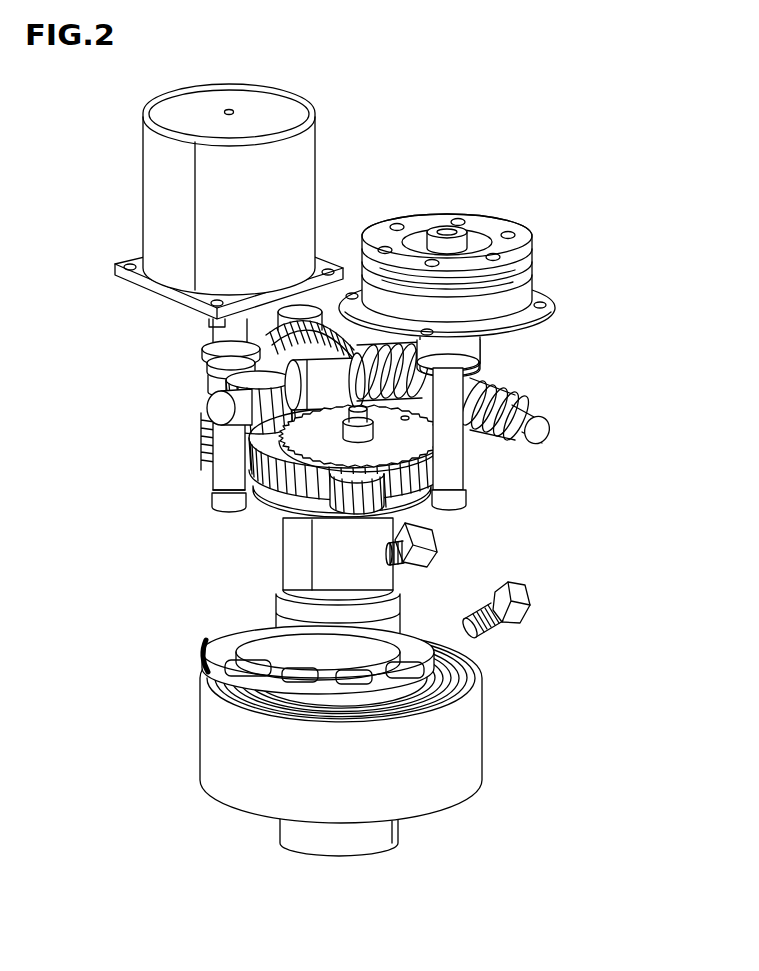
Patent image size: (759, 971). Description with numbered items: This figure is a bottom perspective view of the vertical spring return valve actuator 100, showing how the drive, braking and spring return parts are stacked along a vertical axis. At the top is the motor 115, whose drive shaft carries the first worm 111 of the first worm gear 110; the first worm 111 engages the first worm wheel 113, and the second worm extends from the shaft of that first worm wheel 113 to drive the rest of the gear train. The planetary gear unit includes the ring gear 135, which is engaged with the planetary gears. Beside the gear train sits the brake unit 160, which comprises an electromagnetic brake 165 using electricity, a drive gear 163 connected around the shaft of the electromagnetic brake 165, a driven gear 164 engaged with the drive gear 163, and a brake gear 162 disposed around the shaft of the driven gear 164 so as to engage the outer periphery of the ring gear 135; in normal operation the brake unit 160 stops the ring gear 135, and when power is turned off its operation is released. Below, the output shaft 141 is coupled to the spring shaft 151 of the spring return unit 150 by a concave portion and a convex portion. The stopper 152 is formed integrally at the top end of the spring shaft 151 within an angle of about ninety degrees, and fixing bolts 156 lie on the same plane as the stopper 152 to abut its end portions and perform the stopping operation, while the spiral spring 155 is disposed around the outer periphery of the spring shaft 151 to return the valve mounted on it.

The vertical spring return valve actuator 100 is at (577, 210).
The first worm gear 110 is at (158, 415).
The first worm 111 is at (205, 356).
The first worm wheel 113 is at (210, 380).
The motor 115 is at (157, 195).
The ring gear 135 is at (275, 532).
The output shaft 141 is at (292, 564).
The spring return unit 150 is at (335, 776).
The spring shaft 151 is at (343, 850).
The stopper 152 is at (255, 623).
The spiral spring 155 is at (440, 770).
The fixing bolts 156 is at (428, 549).
The brake unit 160 is at (447, 237).
The brake gear 162 is at (397, 497).
The drive gear 163 is at (463, 462).
The driven gear 164 is at (460, 447).
The electromagnetic brake 165 is at (432, 198).